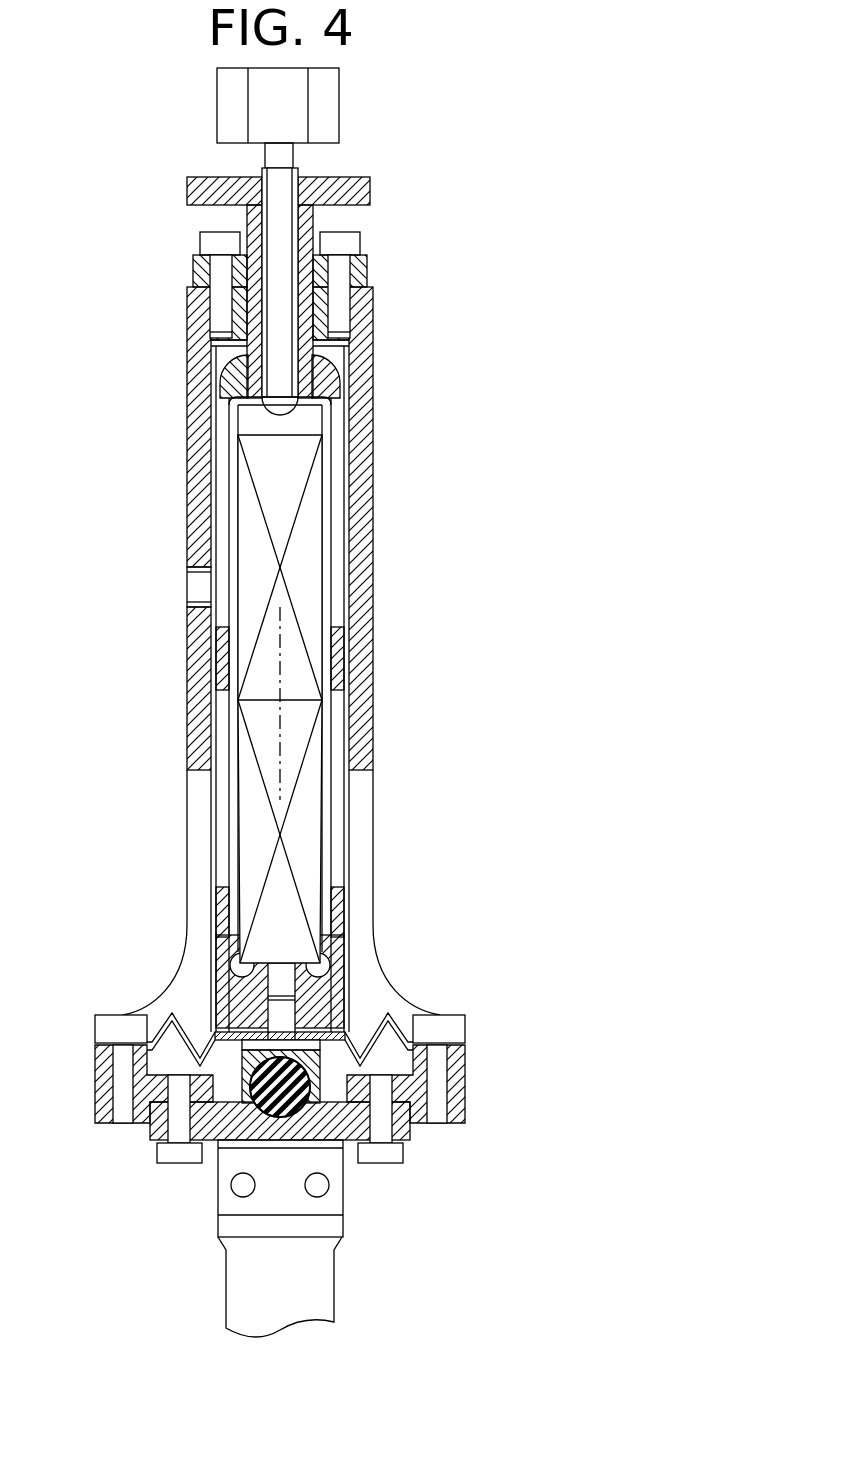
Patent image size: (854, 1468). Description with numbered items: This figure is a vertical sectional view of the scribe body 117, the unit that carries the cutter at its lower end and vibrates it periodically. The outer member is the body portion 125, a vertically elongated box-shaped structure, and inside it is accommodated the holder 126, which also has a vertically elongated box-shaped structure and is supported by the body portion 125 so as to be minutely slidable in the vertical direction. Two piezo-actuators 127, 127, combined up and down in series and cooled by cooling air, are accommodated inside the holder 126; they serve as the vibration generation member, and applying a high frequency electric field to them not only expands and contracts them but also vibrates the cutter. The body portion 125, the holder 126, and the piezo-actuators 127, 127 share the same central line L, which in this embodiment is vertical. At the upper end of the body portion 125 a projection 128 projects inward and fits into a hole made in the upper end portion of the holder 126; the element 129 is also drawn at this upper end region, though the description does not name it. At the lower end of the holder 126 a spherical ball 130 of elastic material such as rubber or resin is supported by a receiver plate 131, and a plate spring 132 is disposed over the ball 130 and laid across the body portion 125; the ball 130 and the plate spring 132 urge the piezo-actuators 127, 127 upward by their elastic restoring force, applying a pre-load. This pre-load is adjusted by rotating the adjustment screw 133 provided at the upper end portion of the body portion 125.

The scribe body 117 is at (387, 590).
The body portion 125 is at (363, 498).
The holder 126 is at (337, 412).
The piezo-actuators 127 is at (258, 547).
The projection 128 is at (308, 382).
The ring 129 is at (310, 347).
The spherical ball 130 is at (278, 1127).
The receiver plate 131 is at (325, 1135).
The plate spring 132 is at (390, 1013).
The adjustment screw 133 is at (285, 230).
The central line L is at (280, 730).